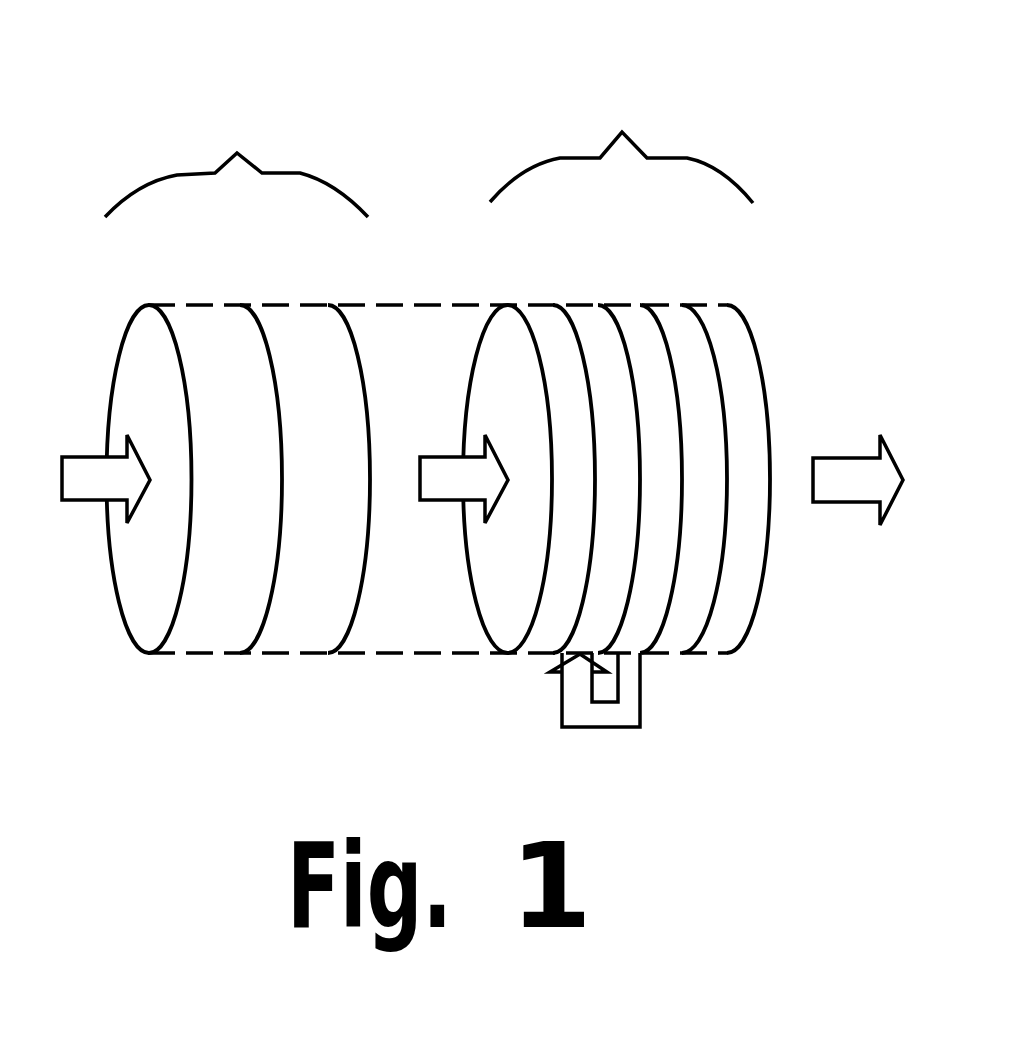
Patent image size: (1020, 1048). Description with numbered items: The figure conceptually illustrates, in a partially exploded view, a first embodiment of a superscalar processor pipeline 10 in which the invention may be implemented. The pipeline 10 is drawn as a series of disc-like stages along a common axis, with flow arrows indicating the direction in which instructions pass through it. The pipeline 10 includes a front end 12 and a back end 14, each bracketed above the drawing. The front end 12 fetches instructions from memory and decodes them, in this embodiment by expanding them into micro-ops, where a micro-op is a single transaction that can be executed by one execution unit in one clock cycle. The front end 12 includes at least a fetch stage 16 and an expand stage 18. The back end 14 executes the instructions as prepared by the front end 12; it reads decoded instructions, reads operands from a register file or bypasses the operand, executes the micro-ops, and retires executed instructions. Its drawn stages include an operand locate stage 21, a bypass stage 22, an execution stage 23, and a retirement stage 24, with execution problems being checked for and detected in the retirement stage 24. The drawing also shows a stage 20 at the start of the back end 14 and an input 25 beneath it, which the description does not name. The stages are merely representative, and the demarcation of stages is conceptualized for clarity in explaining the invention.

The processor pipeline 10 is at (537, 80).
The front end 12 is at (236, 164).
The back end 14 is at (621, 146).
The fetch stage 16 is at (170, 303).
The expand stage 18 is at (270, 303).
The first catalyst layer 20 is at (533, 305).
The operand locate stage 21 is at (572, 305).
The bypass stage 22 is at (613, 305).
The execution stage 23 is at (657, 305).
The retirement stage 24 is at (705, 305).
The reductant inlet 25 is at (593, 727).